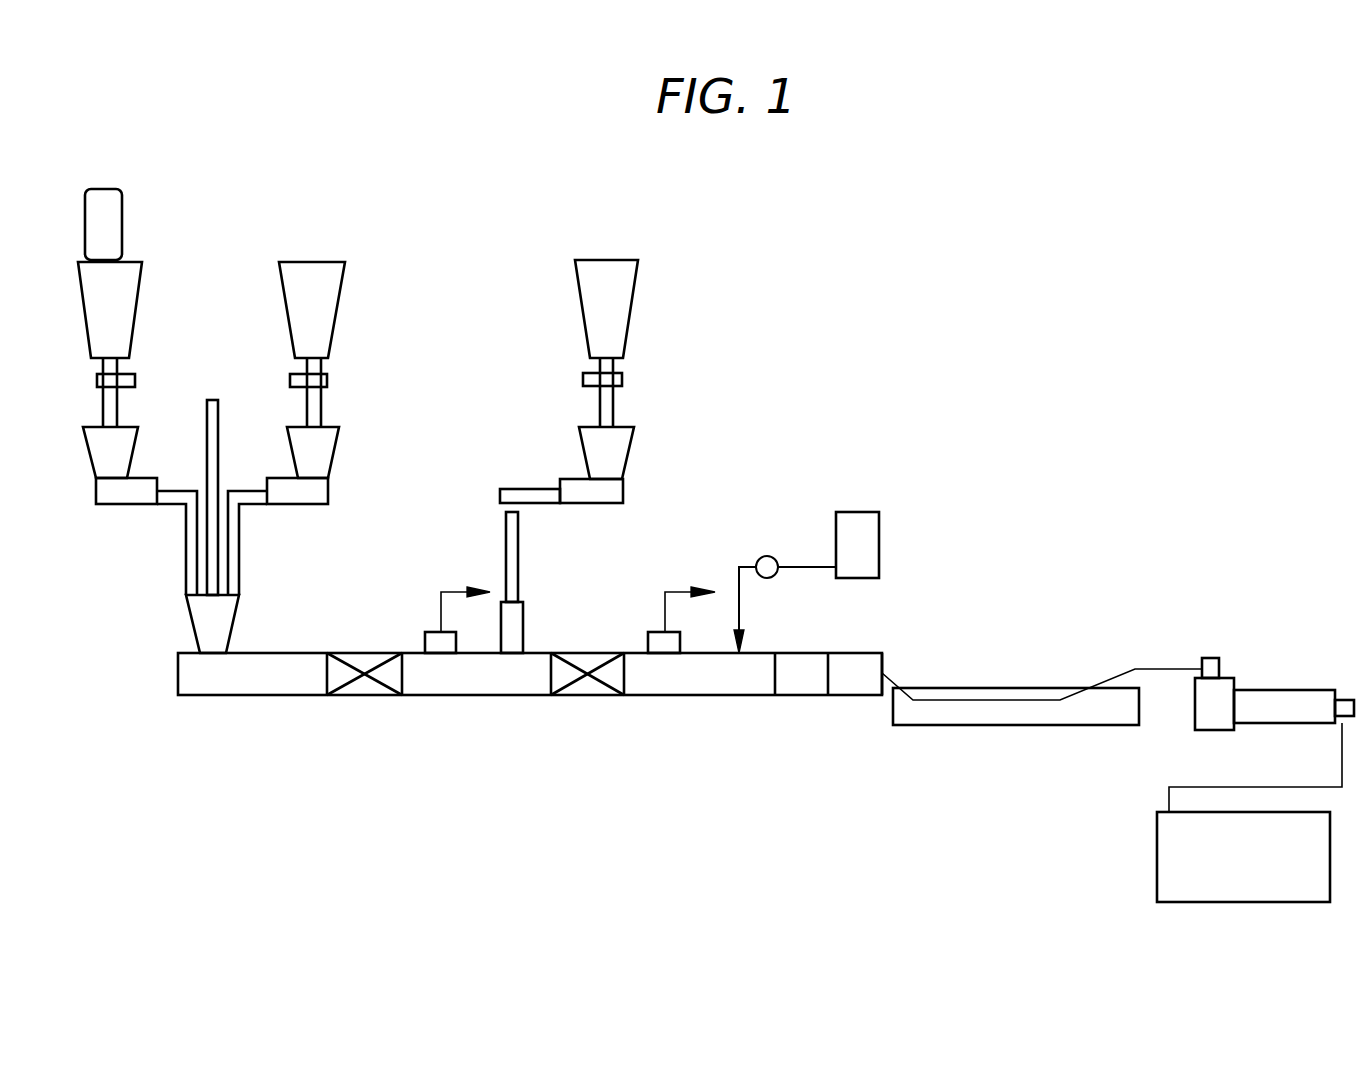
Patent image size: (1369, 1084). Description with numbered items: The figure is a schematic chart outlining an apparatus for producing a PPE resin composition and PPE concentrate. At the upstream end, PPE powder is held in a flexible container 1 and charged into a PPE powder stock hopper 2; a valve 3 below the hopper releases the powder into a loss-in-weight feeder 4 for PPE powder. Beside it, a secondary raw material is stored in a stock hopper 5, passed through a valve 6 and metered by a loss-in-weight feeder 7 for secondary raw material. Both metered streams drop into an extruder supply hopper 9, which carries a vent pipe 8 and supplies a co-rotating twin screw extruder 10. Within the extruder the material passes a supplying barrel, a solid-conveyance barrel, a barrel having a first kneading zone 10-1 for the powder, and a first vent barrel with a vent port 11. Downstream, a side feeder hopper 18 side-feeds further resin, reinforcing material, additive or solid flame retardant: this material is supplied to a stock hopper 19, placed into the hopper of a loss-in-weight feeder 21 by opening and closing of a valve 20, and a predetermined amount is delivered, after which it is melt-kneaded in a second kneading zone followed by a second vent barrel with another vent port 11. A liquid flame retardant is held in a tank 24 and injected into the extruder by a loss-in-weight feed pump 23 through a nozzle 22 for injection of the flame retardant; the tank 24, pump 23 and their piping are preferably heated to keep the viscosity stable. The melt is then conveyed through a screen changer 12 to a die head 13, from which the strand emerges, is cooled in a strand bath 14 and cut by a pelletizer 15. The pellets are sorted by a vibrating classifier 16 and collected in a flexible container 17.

The flexible container for PPE powder 1 is at (101, 224).
The PPE powder stock hopper 2 is at (101, 304).
The valve 3 is at (106, 380).
The loss-in-weight feeder for PPE powder 4 is at (101, 453).
The stock hopper for secondary raw material 5 is at (323, 304).
The valve 6 is at (314, 383).
The loss-in-weight feeder for secondary raw material 7 is at (323, 453).
The vent pipe 8 is at (212, 400).
The extruder supply hopper 9 is at (200, 624).
The co-rotating twin screw extruder 10 is at (192, 674).
The kneading zone for powder 10-1 is at (402, 695).
The vent port 11 is at (454, 592).
The screen changer 12 is at (803, 685).
The die head 13 is at (856, 685).
The strand bath 14 is at (1010, 715).
The pelletizer 15 is at (1215, 720).
The vibrating classifier 16 is at (1283, 715).
The flexible container 17 is at (1253, 893).
The side feeder hopper 18 is at (516, 627).
The stock hopper for secondary raw material 19 is at (615, 304).
The valve 20 is at (610, 383).
The loss-in-weight feeder for secondary raw material 21 is at (615, 453).
The nozzle for injection of flame retardant 22 is at (764, 610).
The feed pump for flame retardant 23 is at (767, 556).
The tank for flame retardant 24 is at (858, 512).